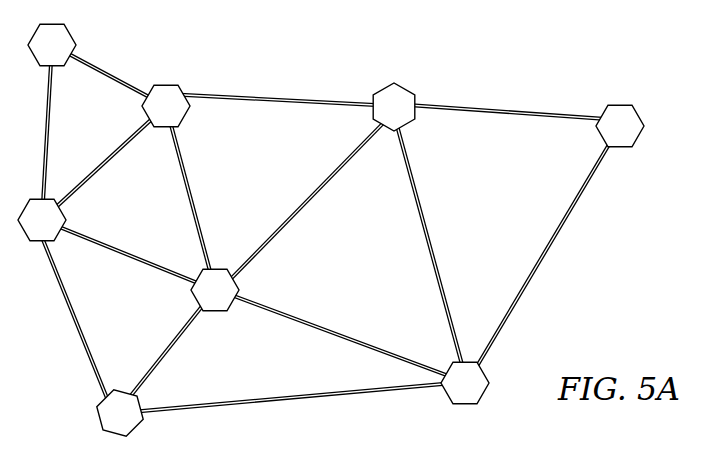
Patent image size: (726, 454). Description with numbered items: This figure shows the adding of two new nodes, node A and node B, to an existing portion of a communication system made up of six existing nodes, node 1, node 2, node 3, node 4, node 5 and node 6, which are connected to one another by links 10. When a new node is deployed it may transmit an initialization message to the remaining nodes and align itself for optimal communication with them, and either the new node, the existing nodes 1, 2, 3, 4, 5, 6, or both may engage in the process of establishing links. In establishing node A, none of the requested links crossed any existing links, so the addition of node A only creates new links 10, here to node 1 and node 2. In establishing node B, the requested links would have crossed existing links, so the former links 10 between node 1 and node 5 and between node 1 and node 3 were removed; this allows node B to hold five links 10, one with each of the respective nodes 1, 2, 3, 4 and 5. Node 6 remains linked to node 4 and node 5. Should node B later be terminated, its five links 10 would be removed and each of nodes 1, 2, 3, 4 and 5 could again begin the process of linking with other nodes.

The links 10 is at (277, 97).
The node A is at (52, 45).
The node B is at (215, 290).
The node 1 is at (166, 106).
The node 2 is at (42, 220).
The node 3 is at (120, 413).
The node 4 is at (394, 107).
The node 5 is at (465, 383).
The node 6 is at (620, 126).